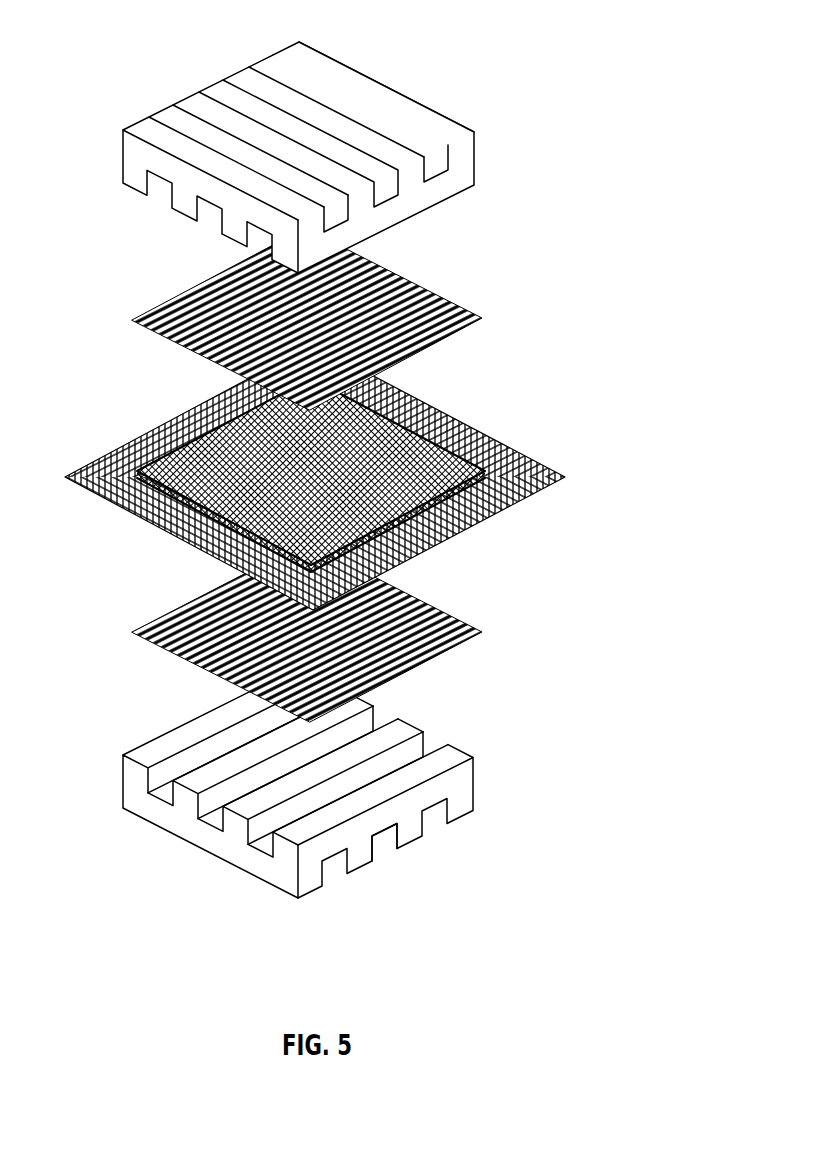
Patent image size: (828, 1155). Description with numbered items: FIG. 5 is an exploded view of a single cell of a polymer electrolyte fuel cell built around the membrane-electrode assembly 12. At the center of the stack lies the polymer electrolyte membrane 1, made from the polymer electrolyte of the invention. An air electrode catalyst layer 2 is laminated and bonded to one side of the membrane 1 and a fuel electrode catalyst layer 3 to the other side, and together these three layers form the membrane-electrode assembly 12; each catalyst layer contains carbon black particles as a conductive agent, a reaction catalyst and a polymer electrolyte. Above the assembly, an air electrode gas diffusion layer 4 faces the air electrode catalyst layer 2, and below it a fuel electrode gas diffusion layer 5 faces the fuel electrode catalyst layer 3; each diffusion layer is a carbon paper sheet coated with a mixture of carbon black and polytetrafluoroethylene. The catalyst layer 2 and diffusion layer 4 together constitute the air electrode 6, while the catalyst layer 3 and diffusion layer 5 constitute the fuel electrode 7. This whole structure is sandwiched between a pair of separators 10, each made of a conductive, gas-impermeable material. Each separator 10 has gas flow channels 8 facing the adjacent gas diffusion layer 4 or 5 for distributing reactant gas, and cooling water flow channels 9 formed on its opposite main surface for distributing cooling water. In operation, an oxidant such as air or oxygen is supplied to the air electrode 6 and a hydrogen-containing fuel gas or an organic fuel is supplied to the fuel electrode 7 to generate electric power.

The polymer electrolyte membrane 1 is at (561, 466).
The air electrode catalyst layer 2 is at (630, 530).
The fuel electrode catalyst layer 3 is at (470, 529).
The air electrode gas diffusion layer 4 is at (468, 323).
The fuel electrode gas diffusion layer 5 is at (475, 628).
The air electrode 6 is at (414, 319).
The fuel electrode 7 is at (407, 617).
The gas flow channels 8 is at (336, 486).
The cooling water flow channels 9 is at (215, 83).
The separator 10 is at (455, 783).
The membrane-electrode assembly 12 is at (369, 477).